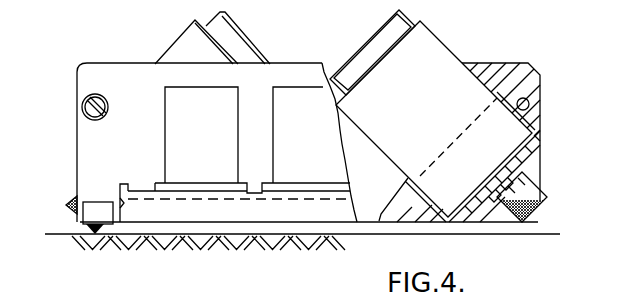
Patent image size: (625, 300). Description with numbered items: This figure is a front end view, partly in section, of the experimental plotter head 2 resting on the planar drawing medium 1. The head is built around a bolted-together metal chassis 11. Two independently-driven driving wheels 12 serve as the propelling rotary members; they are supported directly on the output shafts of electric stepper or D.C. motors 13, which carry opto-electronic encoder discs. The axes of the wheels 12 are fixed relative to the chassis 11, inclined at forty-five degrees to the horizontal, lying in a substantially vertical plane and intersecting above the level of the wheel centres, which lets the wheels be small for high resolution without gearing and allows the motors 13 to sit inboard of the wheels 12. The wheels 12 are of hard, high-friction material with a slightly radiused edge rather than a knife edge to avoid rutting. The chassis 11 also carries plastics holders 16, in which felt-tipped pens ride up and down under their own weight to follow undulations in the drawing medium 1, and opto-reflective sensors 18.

The planar drawing medium 1 is at (47, 234).
The plotter head 2 is at (79, 62).
The chassis 11 is at (530, 104).
The driving wheels 12 is at (70, 203).
The motors 13 is at (180, 46).
The holders 16 is at (228, 156).
The opto-reflective sensors 18 is at (84, 228).